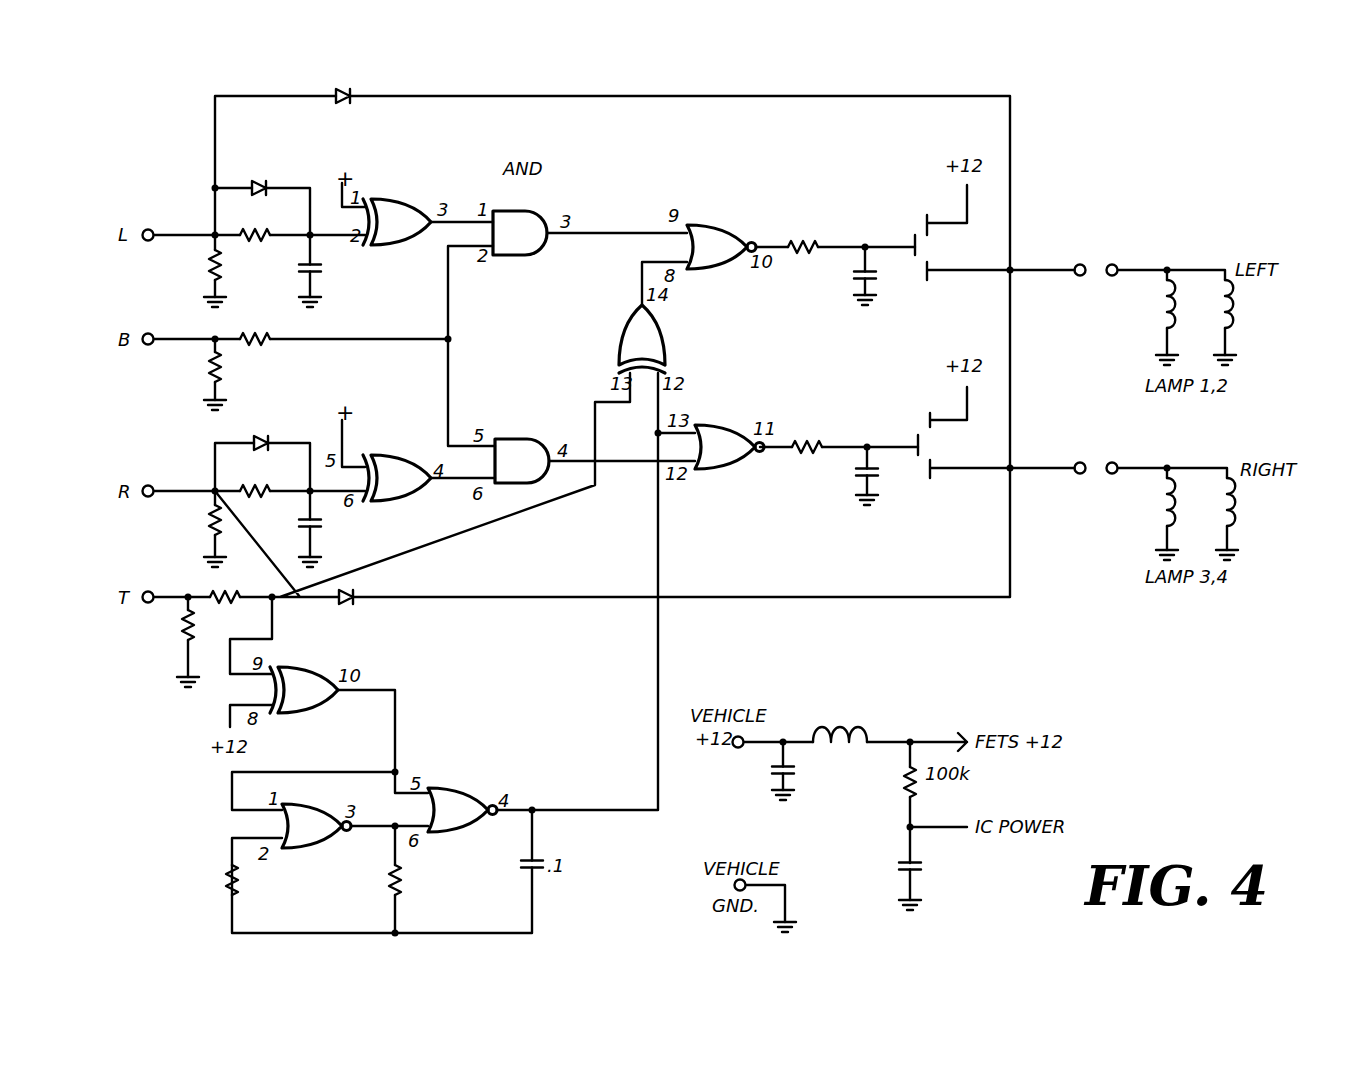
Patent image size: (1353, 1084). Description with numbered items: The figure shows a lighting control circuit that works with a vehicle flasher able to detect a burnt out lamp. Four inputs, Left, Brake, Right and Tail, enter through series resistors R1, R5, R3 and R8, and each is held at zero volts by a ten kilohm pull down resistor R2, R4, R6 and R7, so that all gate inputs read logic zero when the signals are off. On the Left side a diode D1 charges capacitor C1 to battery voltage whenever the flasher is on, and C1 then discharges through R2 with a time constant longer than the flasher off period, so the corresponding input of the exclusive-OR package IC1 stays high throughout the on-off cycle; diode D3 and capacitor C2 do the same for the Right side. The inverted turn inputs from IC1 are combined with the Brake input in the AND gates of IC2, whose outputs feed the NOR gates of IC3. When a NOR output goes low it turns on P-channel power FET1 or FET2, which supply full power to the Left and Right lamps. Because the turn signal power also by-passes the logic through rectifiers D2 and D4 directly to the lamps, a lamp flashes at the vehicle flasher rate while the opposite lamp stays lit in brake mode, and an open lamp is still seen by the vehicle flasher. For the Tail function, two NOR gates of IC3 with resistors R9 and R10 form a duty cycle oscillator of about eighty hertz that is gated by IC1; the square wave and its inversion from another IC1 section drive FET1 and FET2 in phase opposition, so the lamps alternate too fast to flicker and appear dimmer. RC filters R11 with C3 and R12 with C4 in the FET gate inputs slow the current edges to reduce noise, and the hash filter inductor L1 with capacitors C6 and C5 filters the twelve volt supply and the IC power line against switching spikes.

The resistor R1 is at (262, 233).
The pull down resistor R2 is at (214, 271).
The resistor R3 is at (253, 494).
The pull down resistor R4 is at (207, 374).
The resistor R5 is at (264, 340).
The pull down resistor R6 is at (198, 529).
The pull down resistor R7 is at (168, 642).
The resistor R8 is at (230, 598).
The resistor R9 is at (237, 880).
The resistor R10 is at (387, 880).
The resistor R11 is at (803, 246).
The resistor R12 is at (813, 425).
The capacitor C1 is at (332, 271).
The capacitor C2 is at (334, 529).
The capacitor C3 is at (840, 276).
The capacitor C4 is at (855, 476).
The capacitor C5 is at (920, 885).
The capacitor C6 is at (769, 771).
The rectifier D1 is at (271, 175).
The rectifier D2 is at (358, 87).
The rectifier D3 is at (260, 431).
The rectifier D4 is at (356, 608).
The hash filter inductor L1 is at (840, 724).
The exclusive-OR gate integrated circuit IC1 is at (670, 325).
The AND gate integrated circuit IC2 is at (521, 347).
The NOR gate integrated circuit IC3 is at (523, 536).
The power FET FET1 is at (981, 256).
The power FET FET2 is at (957, 471).